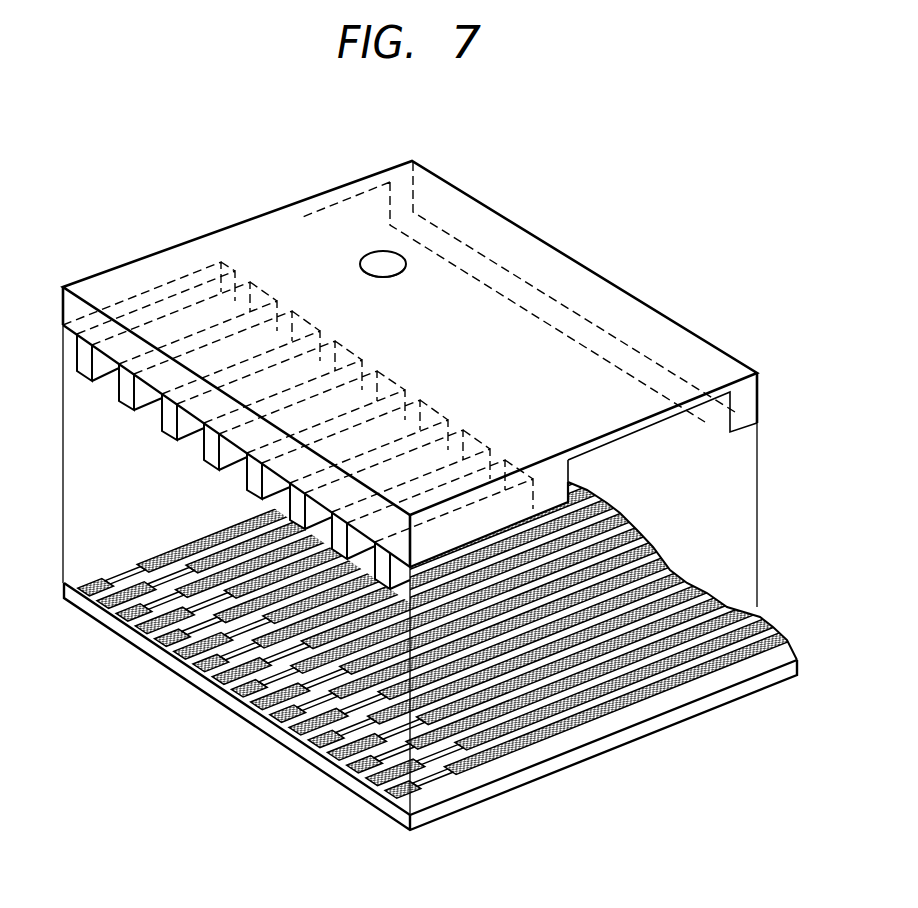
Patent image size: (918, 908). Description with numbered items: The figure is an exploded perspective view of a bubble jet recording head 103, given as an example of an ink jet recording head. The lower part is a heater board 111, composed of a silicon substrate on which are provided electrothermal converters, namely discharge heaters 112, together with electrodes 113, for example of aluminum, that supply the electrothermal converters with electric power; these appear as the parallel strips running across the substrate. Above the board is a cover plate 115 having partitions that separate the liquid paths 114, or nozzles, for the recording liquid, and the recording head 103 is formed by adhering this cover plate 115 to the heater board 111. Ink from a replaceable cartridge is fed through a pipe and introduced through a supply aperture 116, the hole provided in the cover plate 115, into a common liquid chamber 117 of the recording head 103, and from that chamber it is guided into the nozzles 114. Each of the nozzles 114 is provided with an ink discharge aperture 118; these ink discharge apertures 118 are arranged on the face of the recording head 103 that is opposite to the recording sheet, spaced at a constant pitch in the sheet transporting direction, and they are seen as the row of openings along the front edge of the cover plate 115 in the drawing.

The recording head 103 is at (515, 202).
The heater board 111 is at (350, 760).
The discharge heaters 112 is at (197, 625).
The electrodes 113 is at (203, 576).
The liquid paths 114 is at (250, 340).
The cover plate 115 is at (277, 210).
The supply aperture 116 is at (370, 252).
The common liquid chamber 117 is at (672, 445).
The ink discharge apertures 118 is at (140, 397).